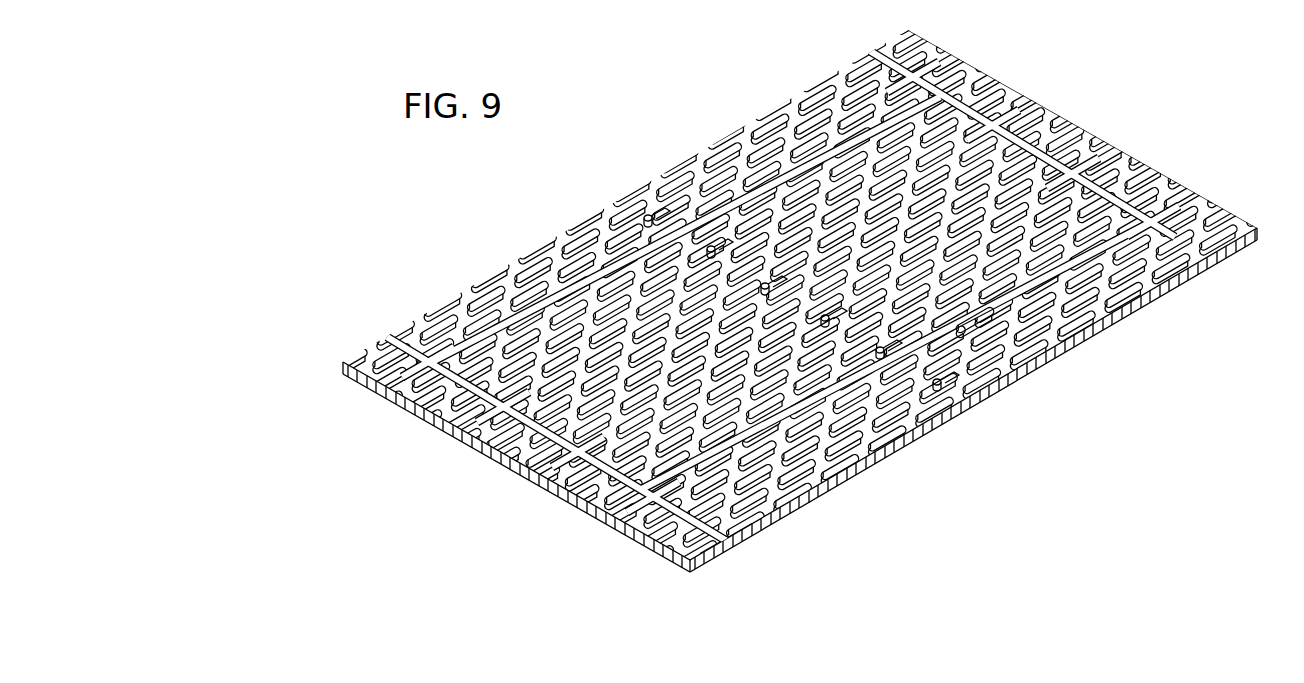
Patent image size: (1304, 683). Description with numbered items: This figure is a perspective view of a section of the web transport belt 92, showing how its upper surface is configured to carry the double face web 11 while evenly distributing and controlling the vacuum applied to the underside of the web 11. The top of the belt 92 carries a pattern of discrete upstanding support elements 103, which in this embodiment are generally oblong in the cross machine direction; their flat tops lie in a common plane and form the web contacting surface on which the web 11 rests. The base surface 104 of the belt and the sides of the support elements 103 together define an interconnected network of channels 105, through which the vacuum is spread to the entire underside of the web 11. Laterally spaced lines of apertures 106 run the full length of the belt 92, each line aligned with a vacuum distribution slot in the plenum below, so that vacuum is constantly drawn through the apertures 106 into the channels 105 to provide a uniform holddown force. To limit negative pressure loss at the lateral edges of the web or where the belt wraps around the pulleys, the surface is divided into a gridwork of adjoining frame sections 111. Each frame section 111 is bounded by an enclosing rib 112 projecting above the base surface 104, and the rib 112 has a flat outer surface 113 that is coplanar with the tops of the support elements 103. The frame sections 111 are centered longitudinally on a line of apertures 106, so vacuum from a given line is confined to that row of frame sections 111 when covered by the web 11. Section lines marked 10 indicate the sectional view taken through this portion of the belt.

The belt 92 is at (794, 100).
The support elements 103 is at (1077, 135).
The base surface 104 is at (727, 510).
The channels 105 is at (965, 108).
The apertures 106 is at (763, 282).
The frame sections 111 is at (1088, 268).
The enclosing rib 112 is at (977, 323).
The flat outer surface 113 is at (1122, 200).
The section line 10 is at (598, 146).
The web 11 is at (870, 58).